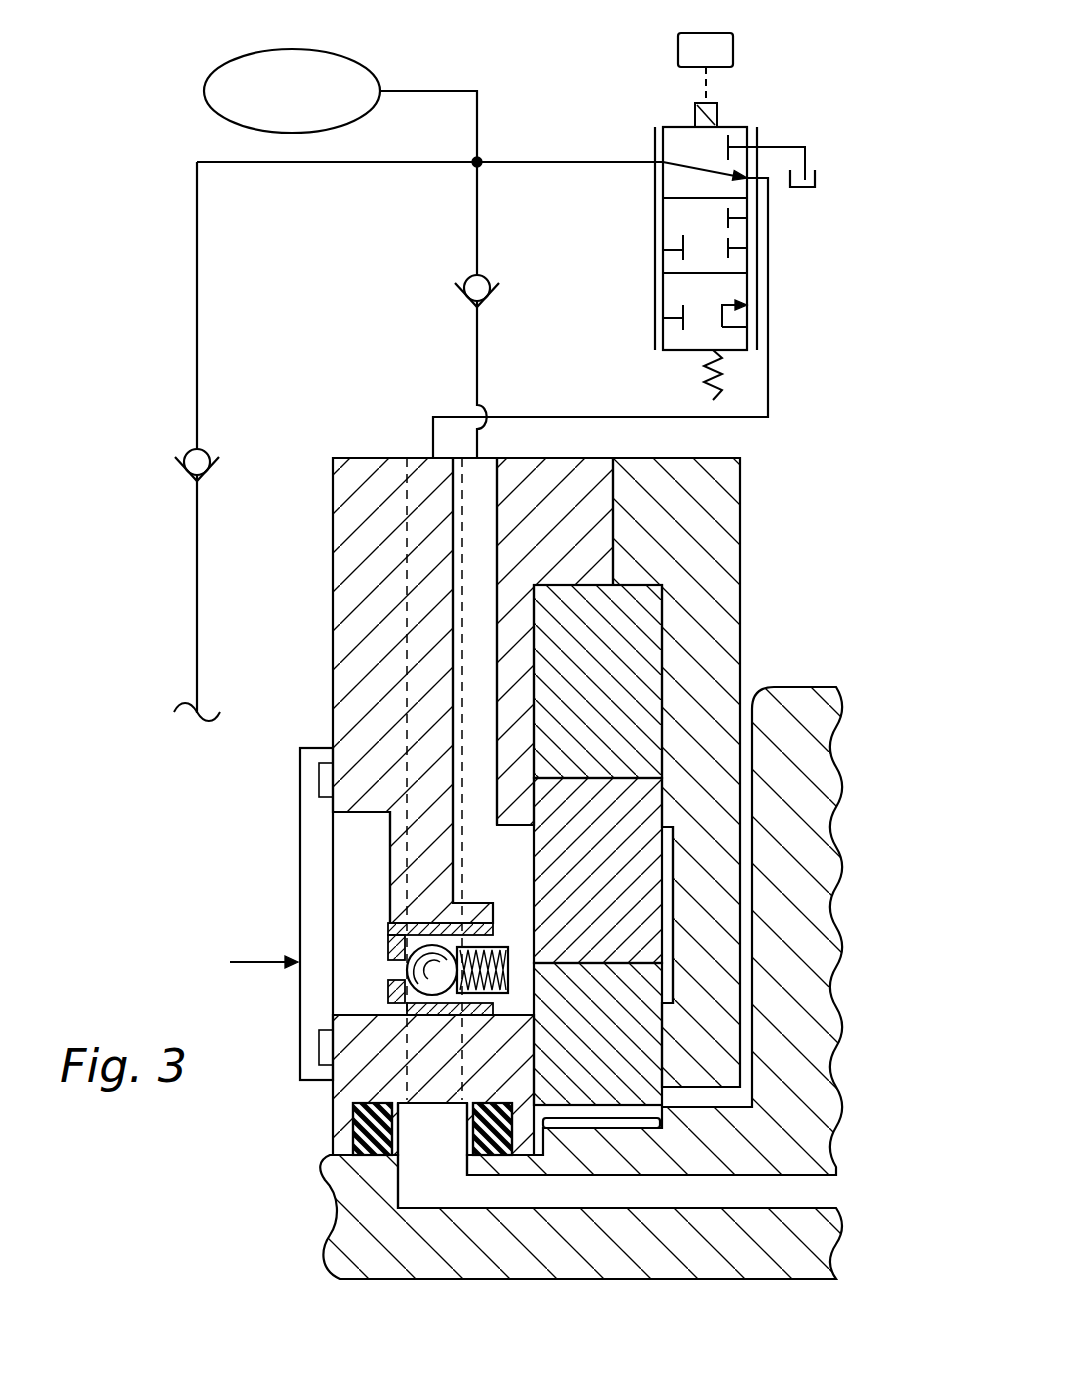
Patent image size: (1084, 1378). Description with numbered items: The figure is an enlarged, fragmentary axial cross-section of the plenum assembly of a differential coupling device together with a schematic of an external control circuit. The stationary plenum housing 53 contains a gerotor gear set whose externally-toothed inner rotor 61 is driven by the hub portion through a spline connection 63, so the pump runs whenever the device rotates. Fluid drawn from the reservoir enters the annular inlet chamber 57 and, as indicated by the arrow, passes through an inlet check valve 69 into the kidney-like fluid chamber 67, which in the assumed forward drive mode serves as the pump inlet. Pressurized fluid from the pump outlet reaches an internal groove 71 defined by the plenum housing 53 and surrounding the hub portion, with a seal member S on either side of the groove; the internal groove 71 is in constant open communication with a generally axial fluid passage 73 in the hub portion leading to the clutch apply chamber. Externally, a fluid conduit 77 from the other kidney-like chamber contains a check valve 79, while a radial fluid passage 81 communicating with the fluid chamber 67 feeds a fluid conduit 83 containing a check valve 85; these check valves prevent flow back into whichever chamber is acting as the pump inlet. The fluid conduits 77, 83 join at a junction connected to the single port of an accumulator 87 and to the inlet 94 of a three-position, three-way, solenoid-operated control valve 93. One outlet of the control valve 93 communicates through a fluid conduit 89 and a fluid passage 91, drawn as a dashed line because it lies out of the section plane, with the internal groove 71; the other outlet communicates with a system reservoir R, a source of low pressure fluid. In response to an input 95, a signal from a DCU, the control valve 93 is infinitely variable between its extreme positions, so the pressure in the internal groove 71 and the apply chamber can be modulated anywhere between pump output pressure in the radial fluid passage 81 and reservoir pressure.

The plenum housing 53 is at (333, 577).
The annular inlet chamber 57 is at (340, 990).
The inner rotor 61 is at (655, 1030).
The spline connection 63 is at (610, 1125).
The kidney-like fluid chamber 67 is at (497, 893).
The inlet check valve 69 is at (405, 972).
The internal groove 71 is at (420, 1140).
The axial fluid passage 73 is at (718, 1195).
The fluid conduit 77 is at (197, 615).
The check valve 79 is at (190, 452).
The radial fluid passage 81 is at (475, 678).
The fluid conduit 83 is at (477, 338).
The check valve 85 is at (470, 278).
The accumulator 87 is at (205, 91).
The fluid conduit 89 is at (768, 312).
The fluid passage 91 is at (405, 515).
The control valve 93 is at (618, 288).
The inlet 94 is at (663, 162).
The input 95 is at (700, 93).
The system reservoir R is at (815, 182).
The seal member S is at (355, 1130).